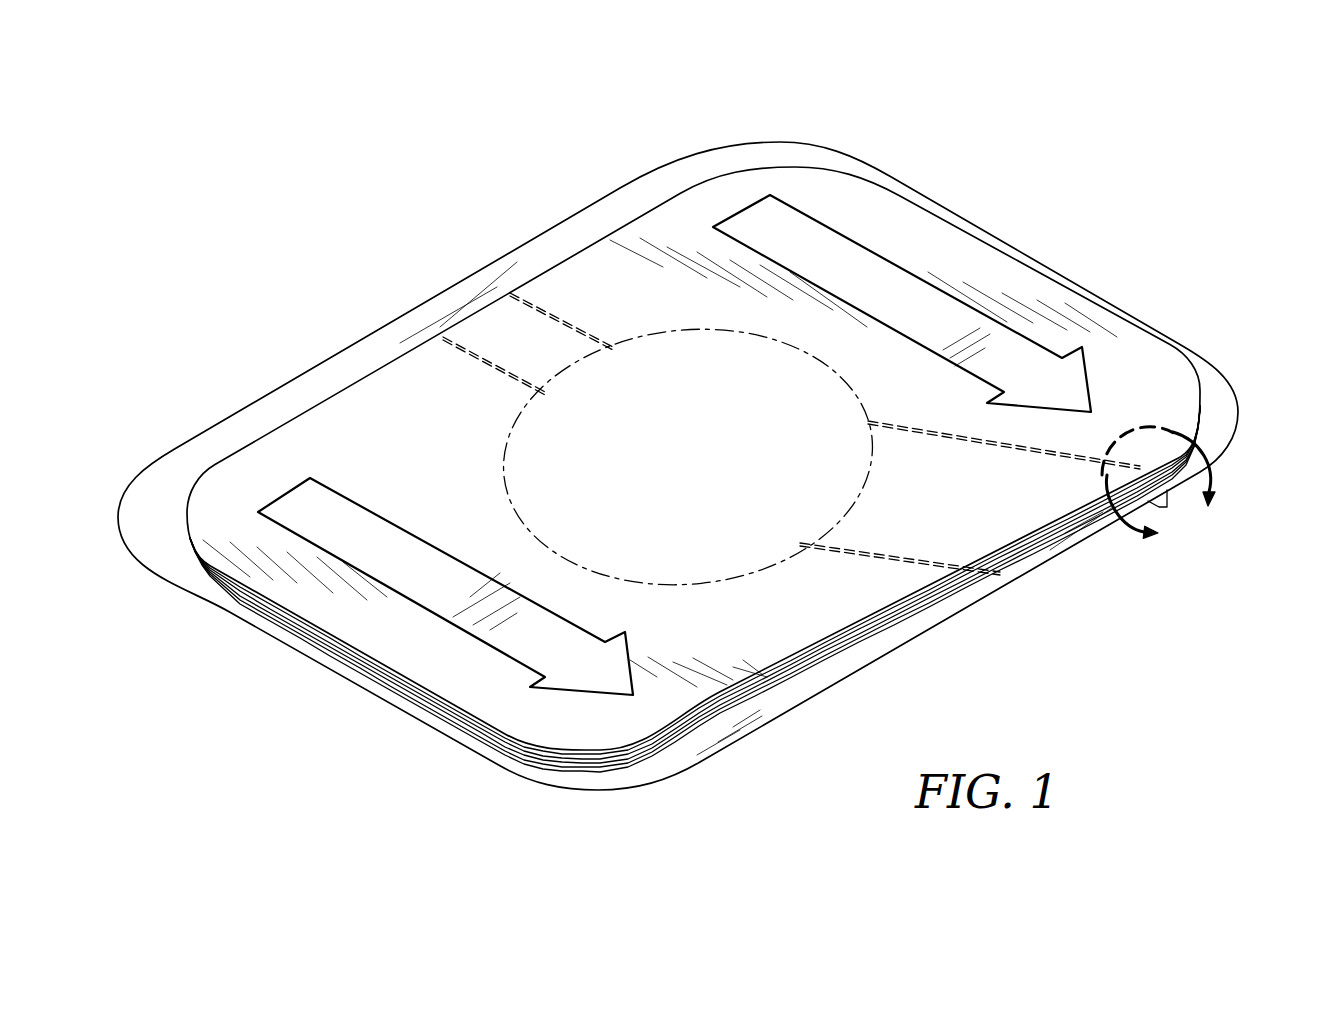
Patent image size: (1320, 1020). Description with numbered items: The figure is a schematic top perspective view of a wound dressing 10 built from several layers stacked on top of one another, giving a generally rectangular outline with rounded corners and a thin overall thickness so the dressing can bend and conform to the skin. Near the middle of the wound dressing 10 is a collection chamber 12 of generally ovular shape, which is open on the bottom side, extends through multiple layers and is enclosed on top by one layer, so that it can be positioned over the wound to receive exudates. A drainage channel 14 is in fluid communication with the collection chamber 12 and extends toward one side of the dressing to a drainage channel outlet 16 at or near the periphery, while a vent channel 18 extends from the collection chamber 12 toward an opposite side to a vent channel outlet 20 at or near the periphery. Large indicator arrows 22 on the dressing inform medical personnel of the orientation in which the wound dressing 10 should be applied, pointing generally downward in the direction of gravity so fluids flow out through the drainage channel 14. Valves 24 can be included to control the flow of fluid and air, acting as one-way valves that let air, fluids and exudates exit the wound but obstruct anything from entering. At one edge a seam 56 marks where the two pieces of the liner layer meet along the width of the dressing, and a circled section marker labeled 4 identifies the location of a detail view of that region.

The wound dressing 10 is at (938, 95).
The collection chamber 12 is at (675, 397).
The drainage channel 14 is at (1067, 473).
The drainage channel outlet 16 is at (1034, 527).
The vent channel 18 is at (533, 340).
The vent channel outlet 20 is at (447, 322).
The indicator 22 is at (1037, 360).
The valves 24 is at (487, 307).
The section line 4- 4 is at (1163, 492).
The seam 56 is at (1167, 503).